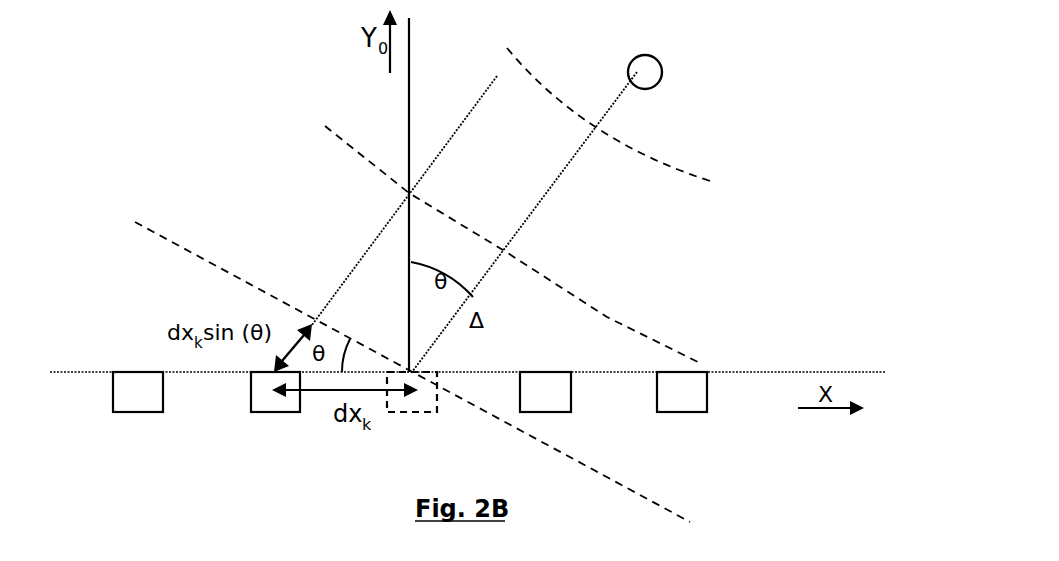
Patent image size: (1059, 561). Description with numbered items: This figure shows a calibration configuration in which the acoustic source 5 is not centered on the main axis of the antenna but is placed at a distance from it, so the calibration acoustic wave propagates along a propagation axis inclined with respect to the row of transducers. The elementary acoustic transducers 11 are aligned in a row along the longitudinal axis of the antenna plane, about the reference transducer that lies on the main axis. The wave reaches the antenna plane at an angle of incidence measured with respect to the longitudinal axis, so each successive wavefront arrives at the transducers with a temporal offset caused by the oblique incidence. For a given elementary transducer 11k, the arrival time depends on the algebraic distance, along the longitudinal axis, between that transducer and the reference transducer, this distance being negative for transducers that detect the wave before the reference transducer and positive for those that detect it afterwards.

The acoustic source 5 is at (662, 83).
The elementary acoustic transducers 11 is at (410, 392).
The elementary transducer 11k is at (266, 396).